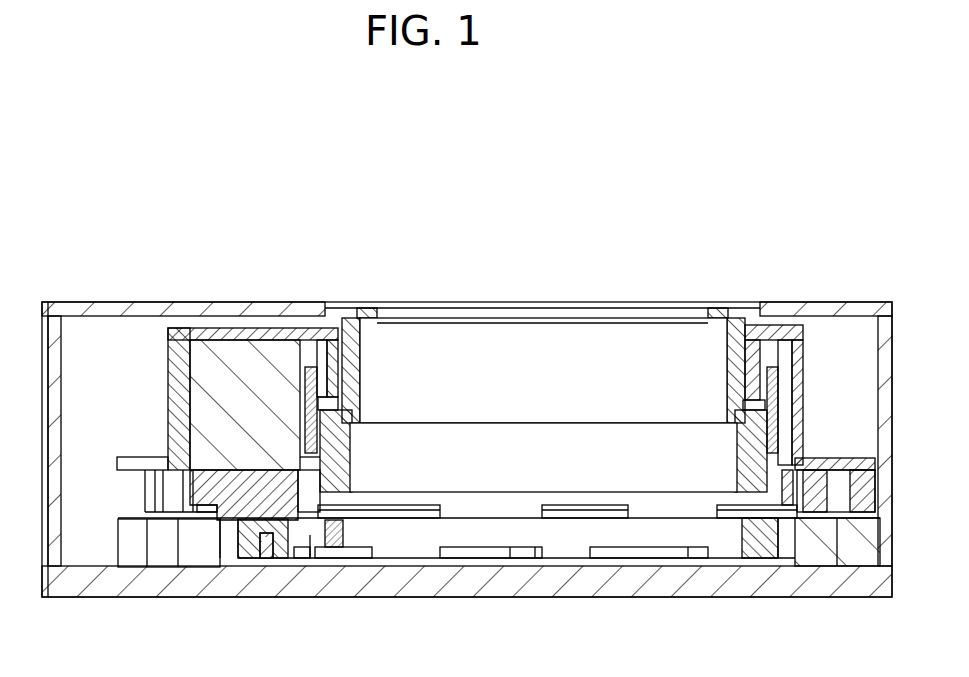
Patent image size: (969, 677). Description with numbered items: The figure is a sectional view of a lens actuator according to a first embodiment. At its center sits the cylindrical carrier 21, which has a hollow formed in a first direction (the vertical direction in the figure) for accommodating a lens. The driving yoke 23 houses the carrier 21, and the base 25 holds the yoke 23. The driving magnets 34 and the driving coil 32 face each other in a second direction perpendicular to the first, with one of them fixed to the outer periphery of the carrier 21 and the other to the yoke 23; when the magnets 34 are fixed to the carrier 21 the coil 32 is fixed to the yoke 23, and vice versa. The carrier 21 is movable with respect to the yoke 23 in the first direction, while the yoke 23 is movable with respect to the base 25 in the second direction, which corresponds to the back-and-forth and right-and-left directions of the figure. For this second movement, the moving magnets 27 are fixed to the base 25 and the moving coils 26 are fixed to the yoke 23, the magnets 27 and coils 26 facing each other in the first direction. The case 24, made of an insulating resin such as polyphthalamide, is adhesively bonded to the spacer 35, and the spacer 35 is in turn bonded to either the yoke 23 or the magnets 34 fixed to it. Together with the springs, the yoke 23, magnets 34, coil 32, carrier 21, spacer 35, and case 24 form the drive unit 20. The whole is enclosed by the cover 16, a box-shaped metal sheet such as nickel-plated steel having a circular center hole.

The cover 16 is at (864, 312).
The drive unit 20 is at (411, 300).
The cylindrical carrier 21 is at (582, 355).
The driving yoke 23 is at (178, 328).
The case 24 is at (421, 540).
The base 25 is at (646, 582).
The moving coils 26 is at (863, 495).
The moving magnets 27 is at (815, 543).
The driving coil 32 is at (314, 367).
The driving magnets 34 is at (240, 352).
The spacer 35 is at (268, 527).